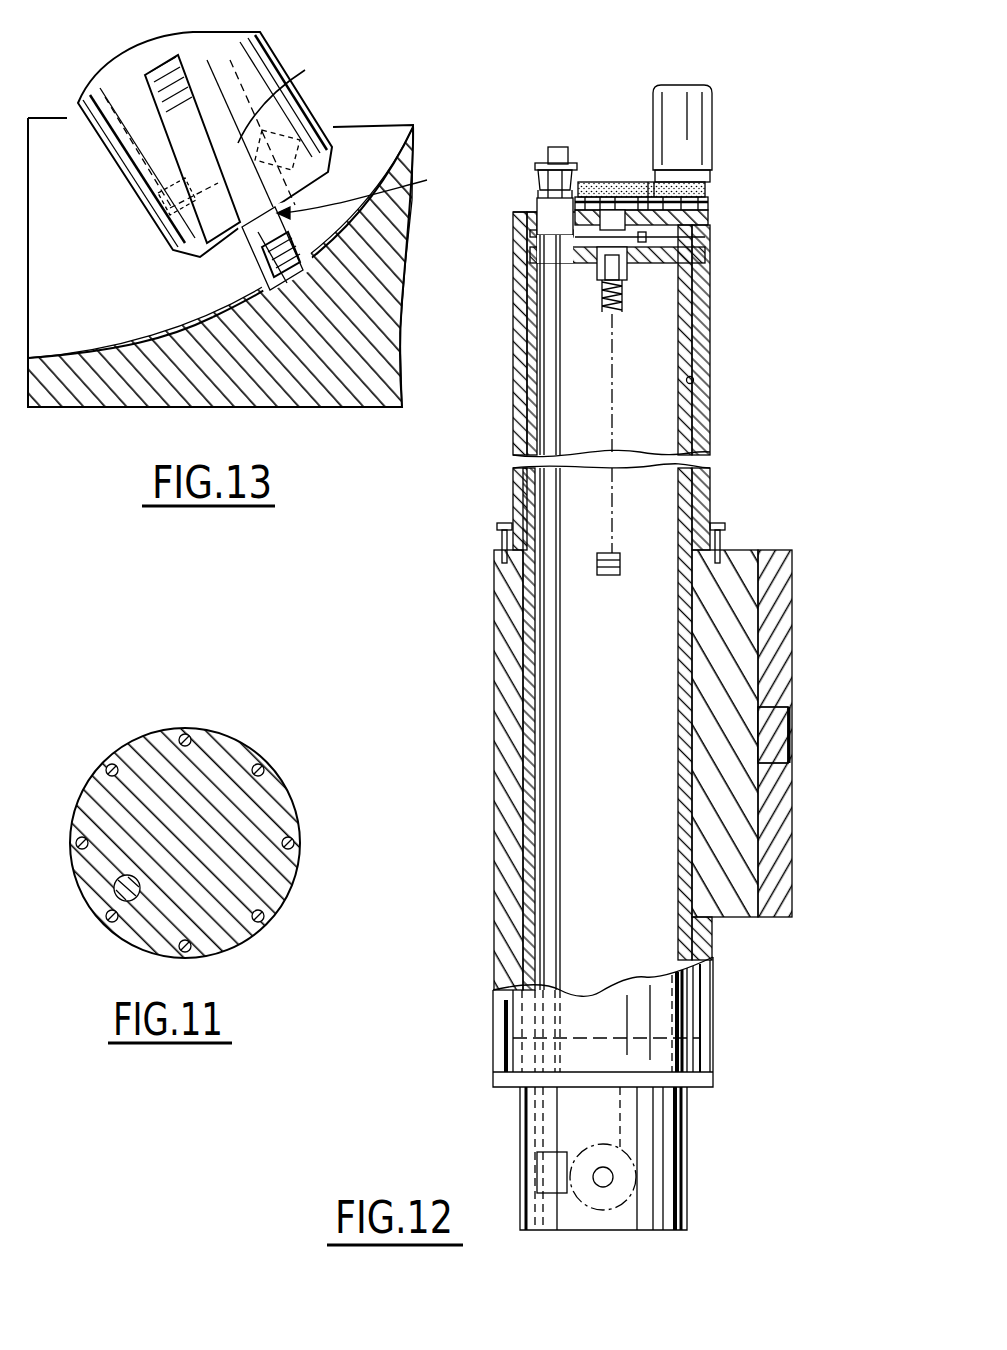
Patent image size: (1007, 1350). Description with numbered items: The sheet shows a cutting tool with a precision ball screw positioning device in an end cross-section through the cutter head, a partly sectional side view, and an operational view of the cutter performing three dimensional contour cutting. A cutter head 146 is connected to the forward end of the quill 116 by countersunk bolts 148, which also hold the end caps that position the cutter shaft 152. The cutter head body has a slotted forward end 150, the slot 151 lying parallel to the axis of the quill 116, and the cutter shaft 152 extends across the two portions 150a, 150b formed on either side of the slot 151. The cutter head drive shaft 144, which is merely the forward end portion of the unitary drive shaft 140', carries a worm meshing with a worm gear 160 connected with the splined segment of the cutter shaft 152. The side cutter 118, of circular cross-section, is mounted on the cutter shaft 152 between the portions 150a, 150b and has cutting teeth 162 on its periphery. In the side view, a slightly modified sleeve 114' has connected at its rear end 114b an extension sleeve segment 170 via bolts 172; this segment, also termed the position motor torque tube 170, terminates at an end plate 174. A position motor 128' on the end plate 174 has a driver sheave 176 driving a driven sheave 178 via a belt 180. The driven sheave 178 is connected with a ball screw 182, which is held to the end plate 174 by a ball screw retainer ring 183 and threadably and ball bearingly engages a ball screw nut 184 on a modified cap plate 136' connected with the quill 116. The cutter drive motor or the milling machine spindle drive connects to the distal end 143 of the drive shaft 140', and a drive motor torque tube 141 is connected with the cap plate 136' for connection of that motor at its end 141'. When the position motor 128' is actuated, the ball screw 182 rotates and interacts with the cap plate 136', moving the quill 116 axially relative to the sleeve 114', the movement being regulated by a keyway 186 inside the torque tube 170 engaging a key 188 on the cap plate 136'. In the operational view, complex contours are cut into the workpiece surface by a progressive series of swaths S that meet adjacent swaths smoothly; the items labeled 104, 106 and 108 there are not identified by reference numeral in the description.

In FIG. 13, the body/bone 104 is at (113, 352).
In FIG. 13, the swaths S is at (233, 312).
In FIG. 13, the block 106 is at (408, 253).
In FIG. 13, the slotted forward end 150 is at (337, 109).
In FIG. 11, the slotted forward end 150 is at (116, 740).
In FIG. 13, the first portion of the forward end 150a is at (282, 63).
In FIG. 13, the second portion of the forward end 150b is at (82, 131).
In FIG. 13, the cutter shaft 152 is at (286, 130).
In FIG. 13, the cutter head drive shaft 144 is at (113, 164).
In FIG. 11, the cutter head drive shaft 144 is at (117, 895).
In FIG. 13, the worm gear 160 is at (150, 226).
In FIG. 13, the side cutter 118 is at (265, 240).
In FIG. 13, the cutting teeth 162 is at (283, 270).
In FIG. 13, the slot 151 is at (373, 191).
In FIG. 12, the extension sleeve segment 170 is at (513, 318).
In FIG. 12, the modified cap plate 136' is at (730, 592).
In FIG. 12, the quill 116 is at (710, 337).
In FIG. 12, the keyway 186 is at (694, 379).
In FIG. 12, the position motor 128' is at (715, 127).
In FIG. 12, the driver sheave 176 is at (717, 176).
In FIG. 12, the driven sheave 178 is at (595, 182).
In FIG. 12, the belt 180 is at (649, 182).
In FIG. 12, the end plate 174 is at (716, 208).
In FIG. 12, the ball screw retainer ring 183 is at (710, 223).
In FIG. 12, the key 188 is at (706, 255).
In FIG. 12, the distal end of the drive shaft 143 is at (550, 148).
In FIG. 12, the end of the drive motor torque tube 141' is at (528, 151).
In FIG. 12, the drive motor torque tube 141 is at (530, 213).
In FIG. 12, the drive shaft 140' is at (501, 612).
In FIG. 12, the ball screw nut 184 is at (623, 278).
In FIG. 12, the ball screw 182 is at (630, 392).
In FIG. 12, the modified sleeve 114' is at (482, 729).
In FIG. 12, the bolts 172 is at (498, 537).
In FIG. 12, the rear end of the sleeve 114b is at (731, 549).
In FIG. 12, the mount block 108 is at (773, 549).
In FIG. 12, the cutter head 146 is at (708, 1158).
In FIG. 11, the countersunk bolts 148 is at (254, 764).